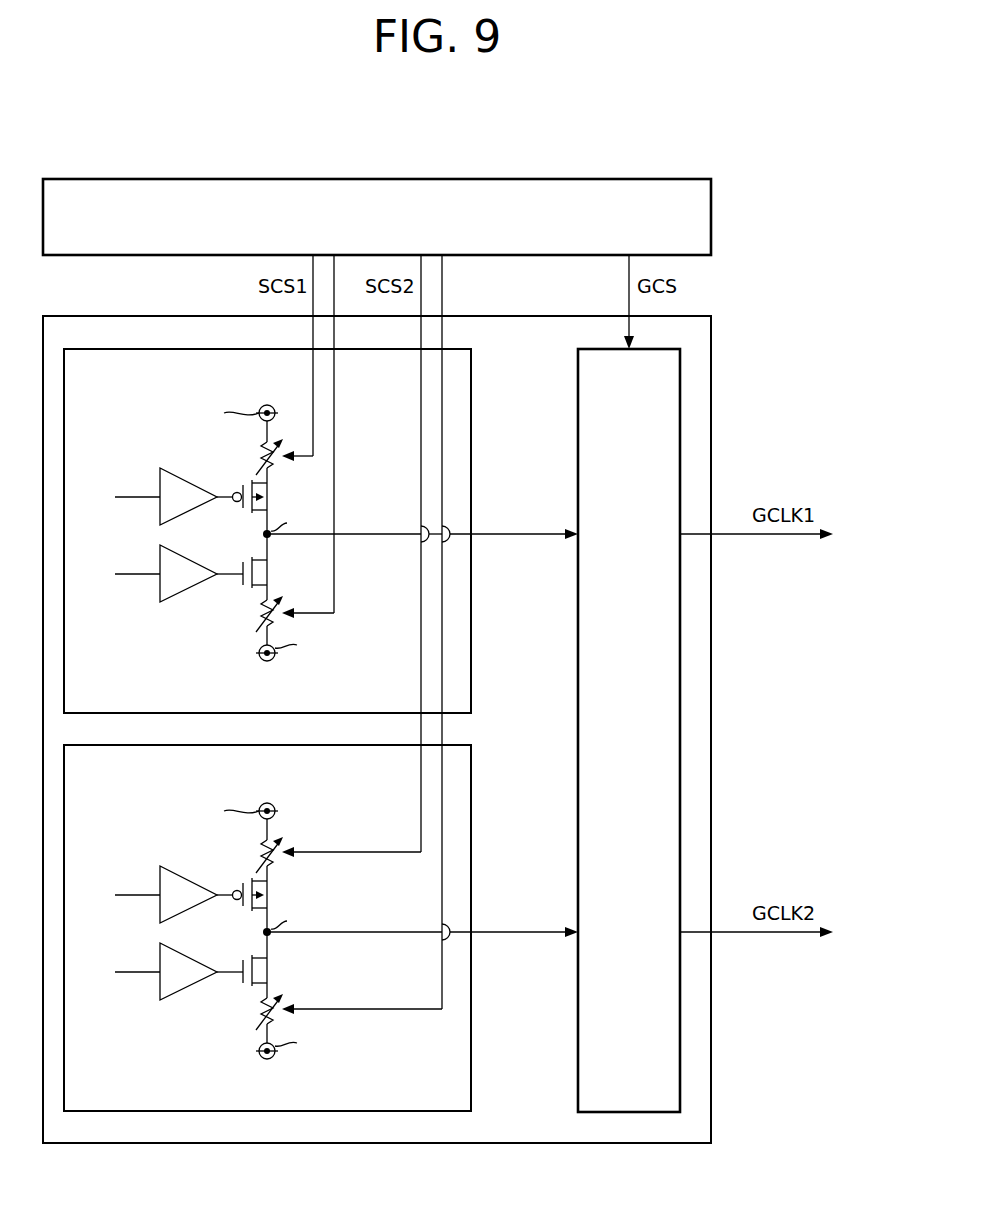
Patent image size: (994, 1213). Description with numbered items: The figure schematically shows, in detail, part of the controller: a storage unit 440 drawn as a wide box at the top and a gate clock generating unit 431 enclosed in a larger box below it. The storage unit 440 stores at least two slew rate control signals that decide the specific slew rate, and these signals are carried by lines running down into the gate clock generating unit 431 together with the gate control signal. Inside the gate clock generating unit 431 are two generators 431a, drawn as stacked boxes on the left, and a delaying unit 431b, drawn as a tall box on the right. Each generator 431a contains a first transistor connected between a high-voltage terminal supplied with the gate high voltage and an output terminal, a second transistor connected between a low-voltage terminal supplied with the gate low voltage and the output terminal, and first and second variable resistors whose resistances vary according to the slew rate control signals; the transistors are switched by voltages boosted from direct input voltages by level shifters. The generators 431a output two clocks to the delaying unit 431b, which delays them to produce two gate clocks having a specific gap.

The storage unit 440 is at (361, 229).
The gate clock generating unit 431 is at (711, 381).
The generator 431a is at (471, 380).
The delaying unit 431b is at (608, 740).